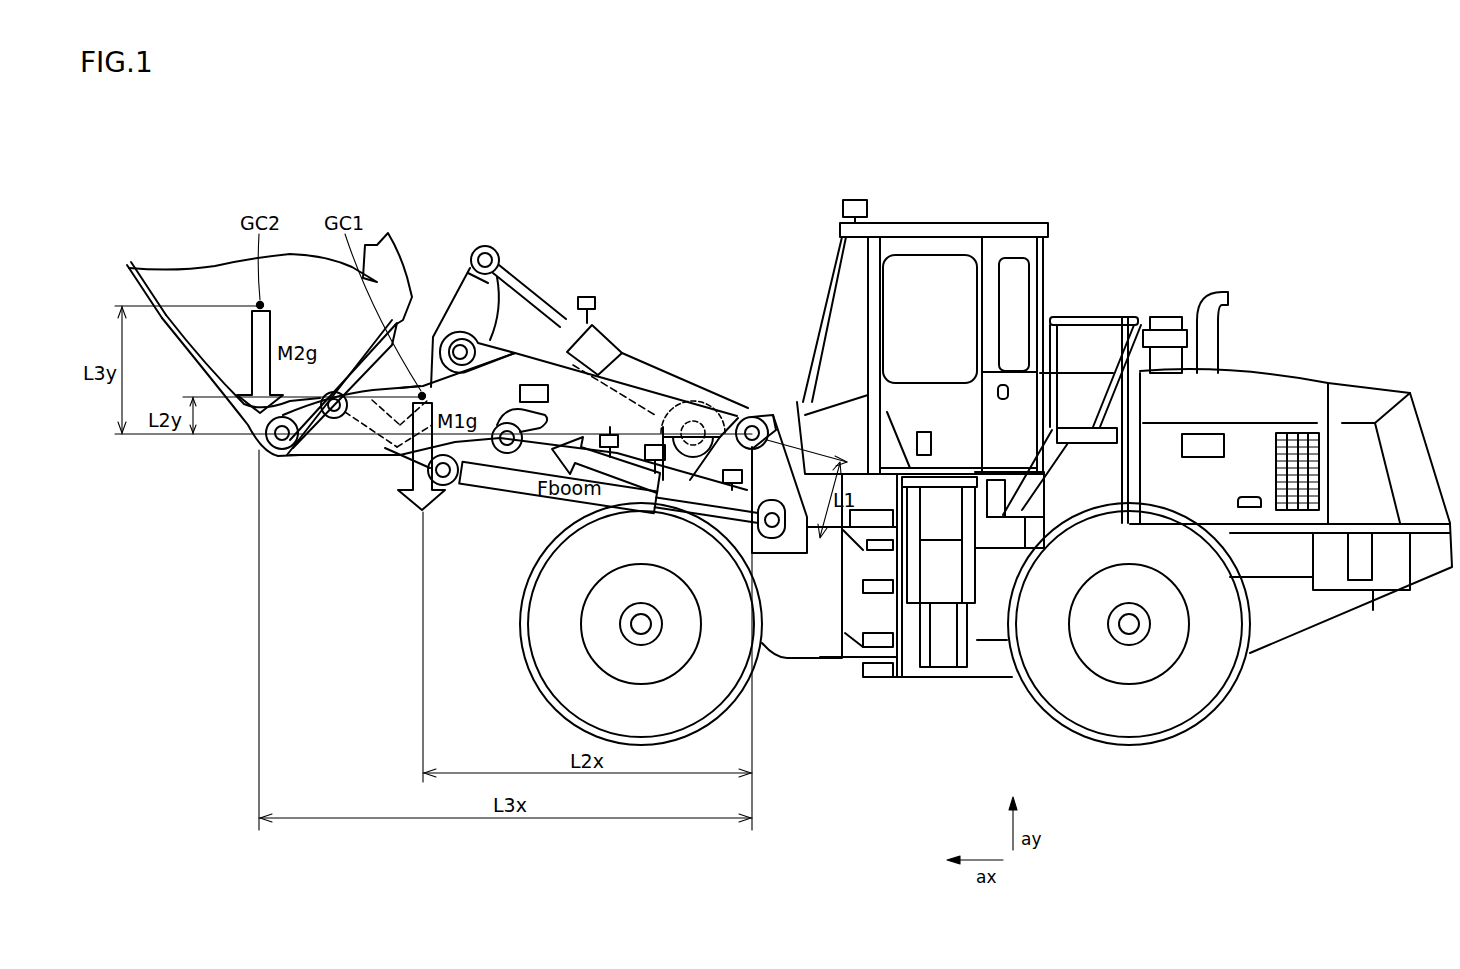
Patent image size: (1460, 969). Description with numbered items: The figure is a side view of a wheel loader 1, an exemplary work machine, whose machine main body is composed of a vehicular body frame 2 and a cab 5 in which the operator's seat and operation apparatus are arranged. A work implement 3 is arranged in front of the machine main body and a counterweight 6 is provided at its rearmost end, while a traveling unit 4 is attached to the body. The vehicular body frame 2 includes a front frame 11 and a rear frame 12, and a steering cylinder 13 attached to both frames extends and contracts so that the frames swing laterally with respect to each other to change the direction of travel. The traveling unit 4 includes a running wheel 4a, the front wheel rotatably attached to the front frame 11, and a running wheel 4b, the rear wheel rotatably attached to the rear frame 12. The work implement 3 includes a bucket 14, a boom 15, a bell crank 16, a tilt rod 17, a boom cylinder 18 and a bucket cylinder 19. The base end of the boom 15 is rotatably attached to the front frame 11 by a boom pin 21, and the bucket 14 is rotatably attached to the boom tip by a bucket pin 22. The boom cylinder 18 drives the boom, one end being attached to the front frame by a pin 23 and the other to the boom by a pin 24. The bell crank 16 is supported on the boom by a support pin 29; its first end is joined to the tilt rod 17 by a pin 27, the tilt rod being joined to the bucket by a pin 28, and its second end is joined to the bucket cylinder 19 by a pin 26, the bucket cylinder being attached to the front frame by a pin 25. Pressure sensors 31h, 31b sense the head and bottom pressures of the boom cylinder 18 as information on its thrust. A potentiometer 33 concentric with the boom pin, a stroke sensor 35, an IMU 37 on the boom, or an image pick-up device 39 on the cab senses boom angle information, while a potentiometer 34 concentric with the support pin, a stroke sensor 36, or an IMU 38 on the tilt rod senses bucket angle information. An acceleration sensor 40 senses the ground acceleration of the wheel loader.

The wheel loader 1 is at (1175, 210).
The vehicular body frame 2 is at (923, 710).
The work implement 3 is at (505, 230).
The traveling unit 4 is at (859, 650).
The running wheel (front wheel) 4a is at (592, 698).
The running wheel (rear wheel) 4b is at (1128, 720).
The cab 5 is at (940, 232).
The counterweight 6 is at (1430, 567).
The front frame 11 is at (818, 642).
The rear frame 12 is at (993, 655).
The steering cylinder 13 is at (875, 596).
The bucket 14 is at (210, 348).
The boom 15 is at (492, 440).
The bell crank 16 is at (493, 297).
The tilt rod 17 is at (405, 452).
The boom cylinder 18 is at (540, 458).
The bucket cylinder 19 is at (543, 307).
The boom pin 21 is at (756, 424).
The bucket pin 22 is at (283, 450).
The pin 23 is at (771, 540).
The pin 24 is at (498, 480).
The pin 25 is at (697, 412).
The pin 26 is at (485, 246).
The pin 27 is at (443, 487).
The pin 28 is at (337, 419).
The support pin 29 is at (418, 385).
The pressure sensor 31h is at (660, 427).
The pressure sensor 31b is at (730, 420).
The potentiometer 33 is at (768, 420).
The potentiometer 34 is at (459, 340).
The stroke sensor 35 is at (612, 395).
The stroke sensor 36 is at (588, 293).
The inertial measurement unit 37 is at (400, 318).
The IMU 38 is at (377, 410).
The image pick-up device 39 is at (856, 197).
The acceleration sensor 40 is at (1226, 448).